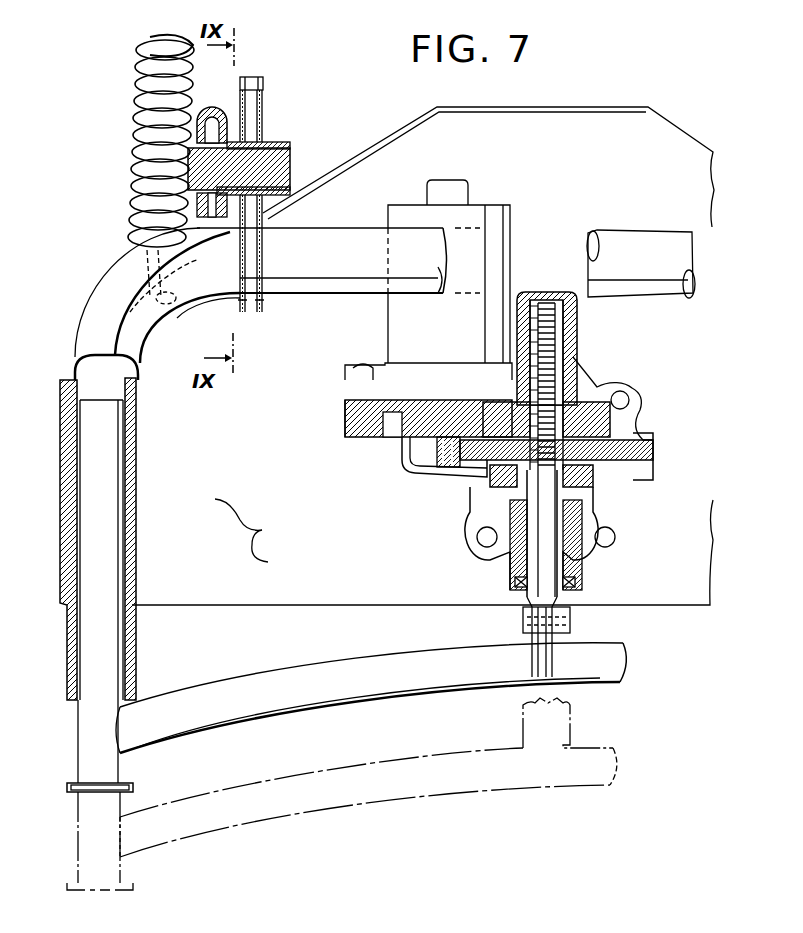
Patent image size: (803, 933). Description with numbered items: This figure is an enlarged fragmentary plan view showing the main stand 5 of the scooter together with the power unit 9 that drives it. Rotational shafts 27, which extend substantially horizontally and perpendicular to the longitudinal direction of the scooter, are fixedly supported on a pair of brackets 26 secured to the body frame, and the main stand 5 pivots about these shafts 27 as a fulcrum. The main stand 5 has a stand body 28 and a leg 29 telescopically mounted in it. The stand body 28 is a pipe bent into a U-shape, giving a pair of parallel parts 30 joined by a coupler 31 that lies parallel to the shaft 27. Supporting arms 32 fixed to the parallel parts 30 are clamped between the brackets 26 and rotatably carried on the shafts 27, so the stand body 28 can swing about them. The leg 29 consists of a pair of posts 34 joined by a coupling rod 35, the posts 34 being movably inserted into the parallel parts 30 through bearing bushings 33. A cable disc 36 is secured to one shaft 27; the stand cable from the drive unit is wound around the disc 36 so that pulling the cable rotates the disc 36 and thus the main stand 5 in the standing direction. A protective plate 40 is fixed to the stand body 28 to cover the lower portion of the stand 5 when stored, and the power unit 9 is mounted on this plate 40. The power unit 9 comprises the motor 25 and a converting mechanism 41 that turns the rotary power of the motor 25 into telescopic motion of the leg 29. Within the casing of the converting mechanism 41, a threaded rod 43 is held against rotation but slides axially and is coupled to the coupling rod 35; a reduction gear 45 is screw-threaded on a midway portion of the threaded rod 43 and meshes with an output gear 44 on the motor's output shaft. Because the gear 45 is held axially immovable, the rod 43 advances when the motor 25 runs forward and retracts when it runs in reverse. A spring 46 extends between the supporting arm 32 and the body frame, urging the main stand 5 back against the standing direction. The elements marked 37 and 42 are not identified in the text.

The main stand 5 is at (245, 530).
The power unit 9 is at (398, 462).
The motor 25 is at (492, 215).
The brackets 26 is at (212, 118).
The rotational shafts 27 is at (291, 168).
The stand body 28 is at (143, 540).
The leg 29 is at (246, 662).
The parallel parts 30 is at (133, 457).
The coupler 31 is at (334, 290).
The supporting arms 32 is at (132, 313).
The bearing bushings 33 is at (65, 522).
The posts 34 is at (87, 742).
The coupling rod 35 is at (422, 680).
The cable disc 36 is at (263, 118).
The nut 37 is at (257, 305).
The protective plate 40 is at (617, 118).
The converting mechanism 41 is at (590, 418).
The spindle sleeve 42 is at (640, 468).
The threaded rod 43 is at (537, 550).
The output gear 44 is at (440, 468).
The reduction gear 45 is at (642, 462).
The spring 46 is at (140, 107).